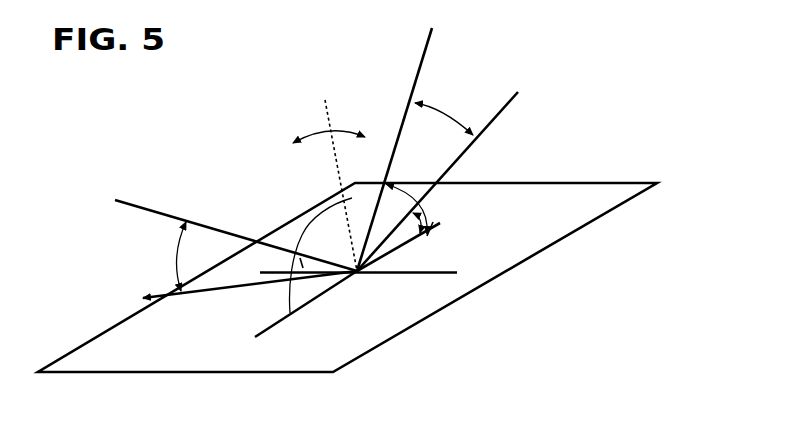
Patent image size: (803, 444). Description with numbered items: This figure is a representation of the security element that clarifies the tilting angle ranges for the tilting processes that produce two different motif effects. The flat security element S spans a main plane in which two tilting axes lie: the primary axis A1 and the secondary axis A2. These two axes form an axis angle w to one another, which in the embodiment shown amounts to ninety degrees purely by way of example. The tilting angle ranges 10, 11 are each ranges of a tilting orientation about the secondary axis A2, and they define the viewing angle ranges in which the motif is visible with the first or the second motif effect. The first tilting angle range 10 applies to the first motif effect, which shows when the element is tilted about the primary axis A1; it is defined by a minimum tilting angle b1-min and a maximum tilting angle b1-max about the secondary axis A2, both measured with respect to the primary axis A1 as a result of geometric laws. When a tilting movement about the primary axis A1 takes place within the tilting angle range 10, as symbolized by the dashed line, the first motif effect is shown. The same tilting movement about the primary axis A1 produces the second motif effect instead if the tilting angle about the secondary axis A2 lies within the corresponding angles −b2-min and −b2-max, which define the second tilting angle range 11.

The tilting angle range 10 is at (432, 100).
The second tilting angle range 11 is at (173, 258).
The security element S is at (610, 212).
The axis angle w is at (393, 259).
The primary axis A1 is at (417, 273).
The secondary axis A2 is at (268, 327).
The maximum tilting angle b1-max is at (420, 203).
The minimum tilting angle b1-min is at (414, 230).
The maximum tilting angle of the second range b2-max is at (290, 300).
The minimum tilting angle of the second range b2-min is at (330, 292).